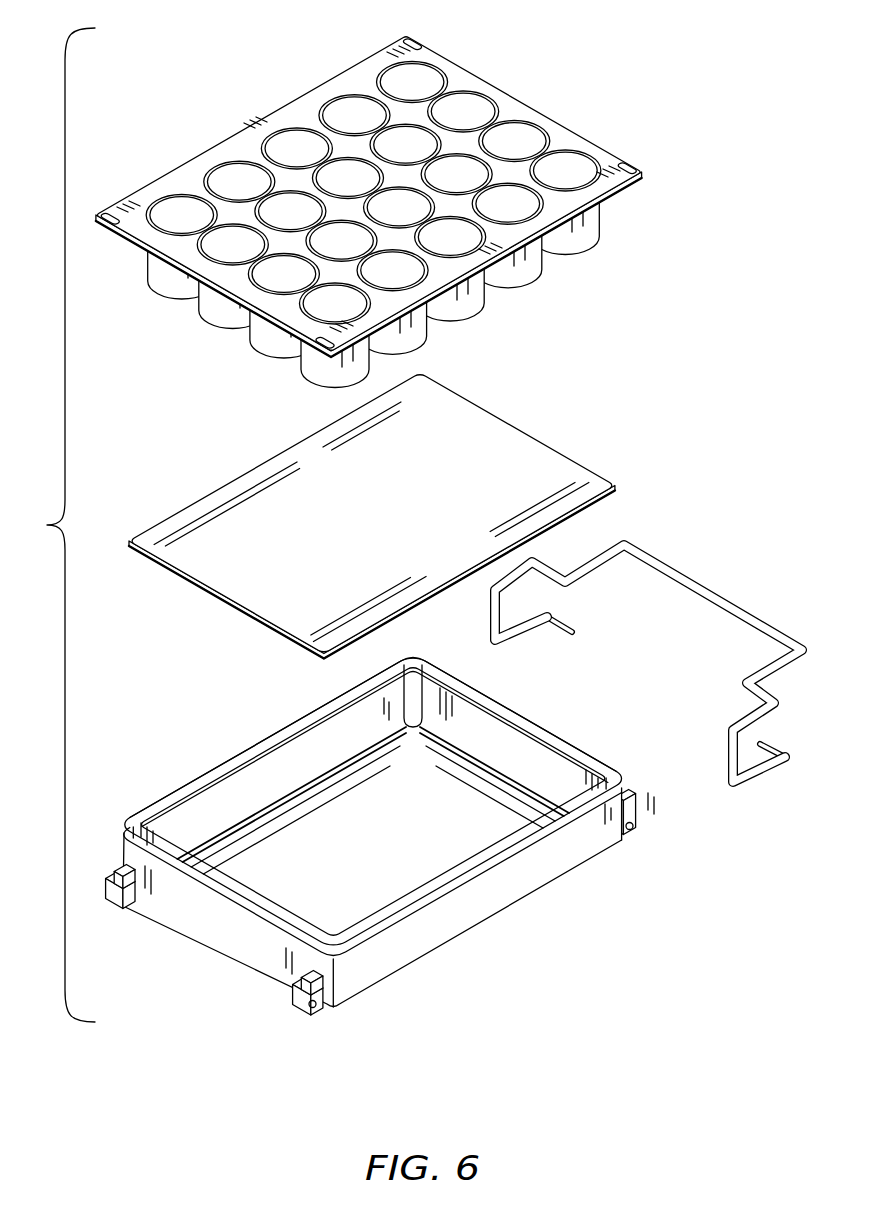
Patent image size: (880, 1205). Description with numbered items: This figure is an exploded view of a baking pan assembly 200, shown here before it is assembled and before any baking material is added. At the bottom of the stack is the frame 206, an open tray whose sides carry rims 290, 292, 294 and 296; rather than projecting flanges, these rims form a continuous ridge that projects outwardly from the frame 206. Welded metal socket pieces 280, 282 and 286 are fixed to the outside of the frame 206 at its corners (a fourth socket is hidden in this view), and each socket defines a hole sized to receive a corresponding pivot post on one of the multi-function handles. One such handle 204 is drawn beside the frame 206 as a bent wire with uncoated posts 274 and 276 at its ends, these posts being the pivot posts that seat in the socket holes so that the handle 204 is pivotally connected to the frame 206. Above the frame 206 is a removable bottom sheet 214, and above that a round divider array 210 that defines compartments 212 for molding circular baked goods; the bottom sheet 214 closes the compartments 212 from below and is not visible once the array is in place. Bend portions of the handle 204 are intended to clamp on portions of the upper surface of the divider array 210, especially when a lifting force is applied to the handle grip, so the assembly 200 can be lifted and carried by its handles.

The baking pan assembly 200 is at (50, 525).
The round divider array 210 is at (262, 110).
The compartments 212 is at (432, 78).
The removable bottom sheet 214 is at (528, 437).
The multi-function handle 204 is at (731, 593).
The uncoated post 274 is at (553, 619).
The uncoated post 276 is at (768, 744).
The frame 206 is at (386, 834).
The welded metal socket piece 280 is at (96, 872).
The welded metal socket piece 282 is at (287, 1017).
The welded metal socket piece 286 is at (640, 840).
The rim 290 is at (242, 897).
The rim 292 is at (238, 748).
The rim 294 is at (566, 727).
The rim 296 is at (527, 843).